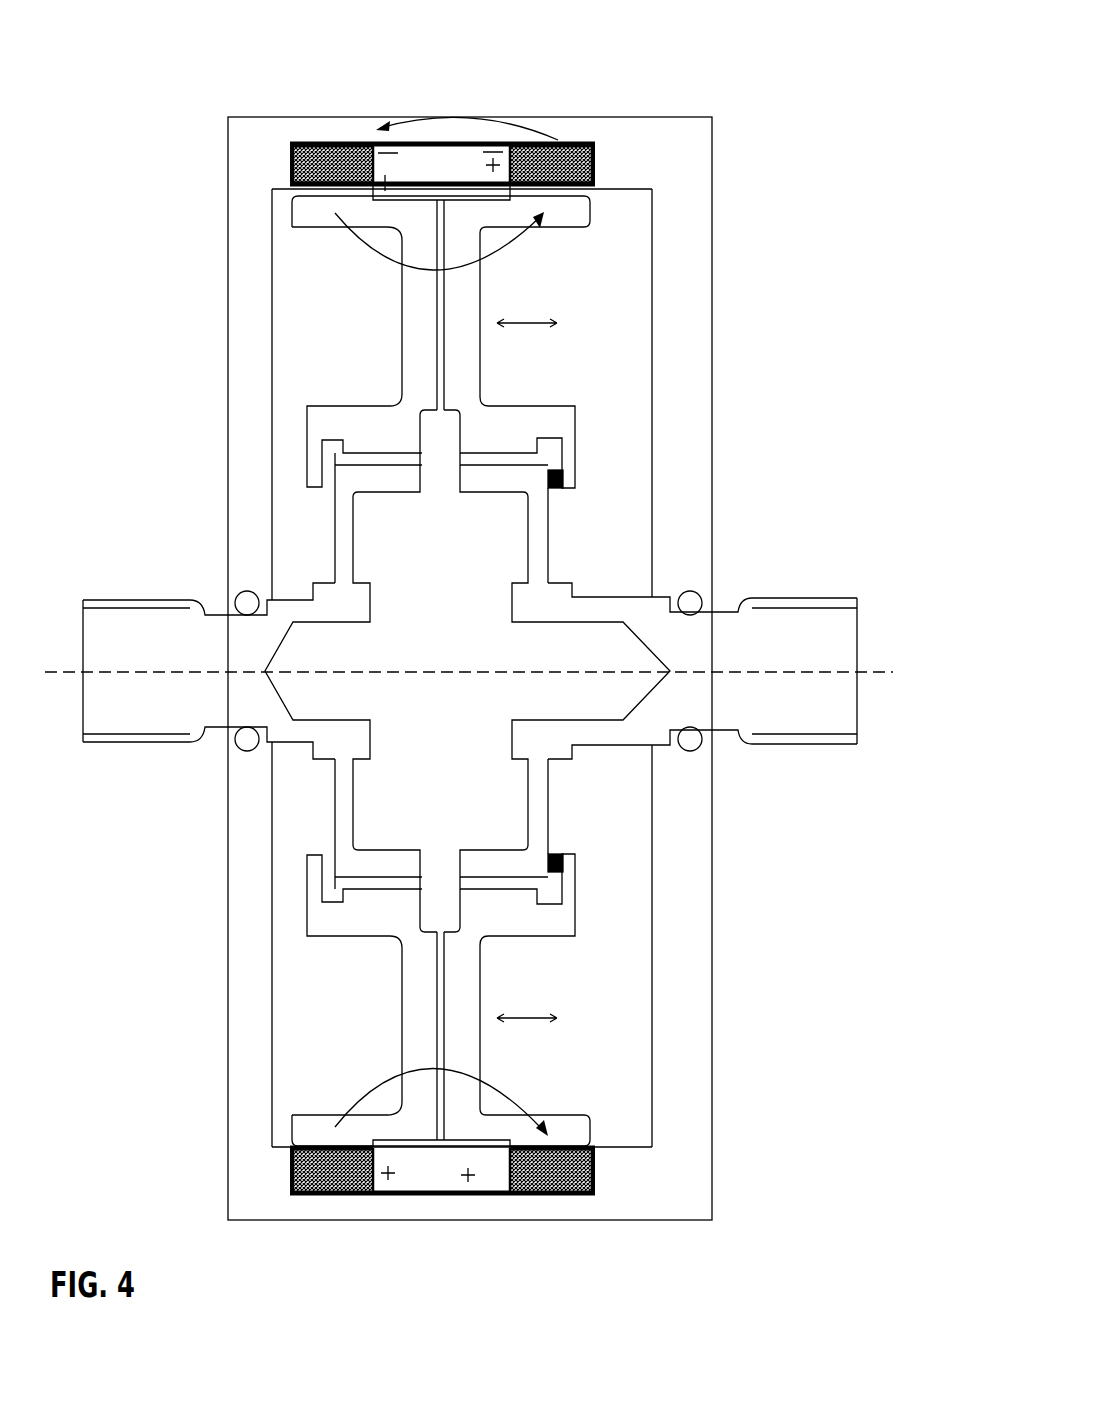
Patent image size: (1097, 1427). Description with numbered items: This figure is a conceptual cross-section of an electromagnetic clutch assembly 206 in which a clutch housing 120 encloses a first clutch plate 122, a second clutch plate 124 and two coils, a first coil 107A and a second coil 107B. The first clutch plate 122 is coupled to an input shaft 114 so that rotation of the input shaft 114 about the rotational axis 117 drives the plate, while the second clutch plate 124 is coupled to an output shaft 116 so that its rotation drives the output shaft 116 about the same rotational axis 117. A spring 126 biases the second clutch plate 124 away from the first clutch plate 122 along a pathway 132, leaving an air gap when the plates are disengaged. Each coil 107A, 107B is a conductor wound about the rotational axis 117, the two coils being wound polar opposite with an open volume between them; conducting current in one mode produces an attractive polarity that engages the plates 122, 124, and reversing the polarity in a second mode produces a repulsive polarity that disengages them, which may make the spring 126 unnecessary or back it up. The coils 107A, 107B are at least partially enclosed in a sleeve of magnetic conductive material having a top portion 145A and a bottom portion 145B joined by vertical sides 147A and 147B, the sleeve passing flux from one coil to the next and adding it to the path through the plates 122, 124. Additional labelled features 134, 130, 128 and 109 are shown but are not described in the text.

The electromagnetic clutch assembly 206 is at (842, 74).
The clutch housing 120 is at (637, 148).
The end cap 134 is at (590, 210).
The first clutch plate 122 is at (413, 373).
The second clutch plate 124 is at (470, 368).
The spring 126 is at (563, 478).
The pathway 132 is at (548, 668).
The input shaft 114 is at (152, 600).
The output shaft 116 is at (818, 598).
The rotational axis 117 is at (500, 671).
The first o-ring seal 130 is at (243, 749).
The second o-ring seal 128 is at (697, 749).
The top portion 145A is at (480, 143).
The bottom portion 145B is at (318, 188).
The side 147A is at (290, 160).
The side 147B is at (595, 163).
The second coil 107B is at (330, 144).
The first coil 107A is at (542, 140).
The base plate 109 is at (303, 1195).